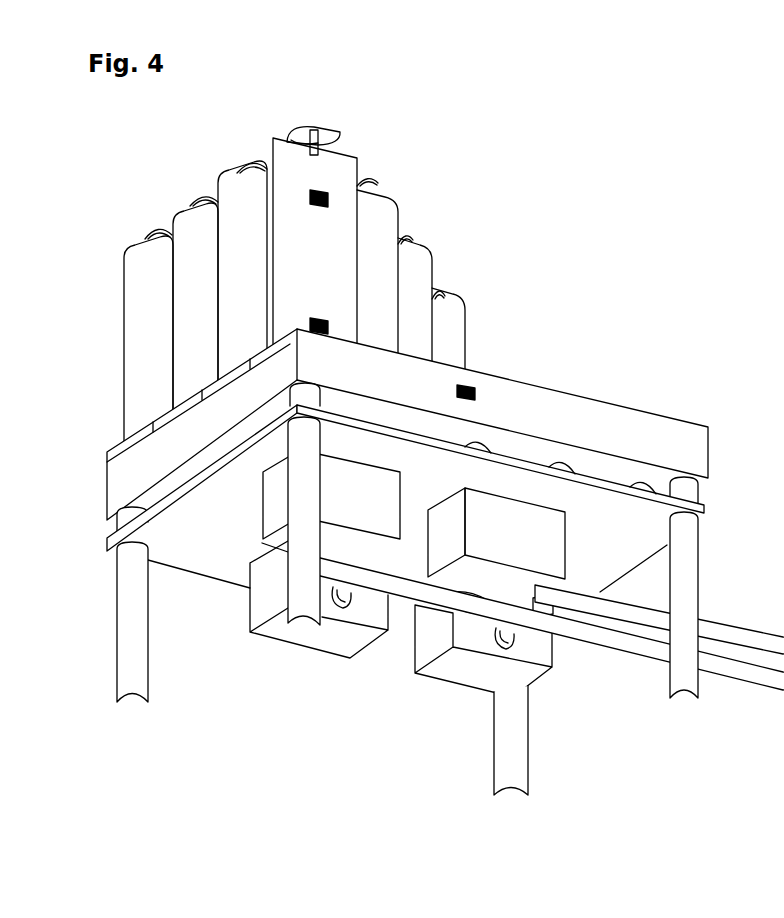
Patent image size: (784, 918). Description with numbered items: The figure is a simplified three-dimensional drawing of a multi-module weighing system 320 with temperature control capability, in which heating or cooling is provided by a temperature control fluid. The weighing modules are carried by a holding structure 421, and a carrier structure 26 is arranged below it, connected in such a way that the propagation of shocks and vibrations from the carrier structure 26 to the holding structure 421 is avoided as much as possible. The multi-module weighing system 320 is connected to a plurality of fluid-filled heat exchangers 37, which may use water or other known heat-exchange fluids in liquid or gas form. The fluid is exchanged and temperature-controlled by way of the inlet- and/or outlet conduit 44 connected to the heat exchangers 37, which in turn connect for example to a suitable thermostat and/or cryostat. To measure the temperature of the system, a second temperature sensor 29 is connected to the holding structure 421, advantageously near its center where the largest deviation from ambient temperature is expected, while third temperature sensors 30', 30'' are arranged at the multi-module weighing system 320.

The multi-module weighing system 320 is at (409, 444).
The third temperature sensor 30'' is at (250, 289).
The third temperature sensor 30' is at (182, 316).
The second temperature sensor 29 is at (584, 325).
The holding structure 421 is at (445, 424).
The heat exchanger 37 is at (414, 514).
The carrier structure 26 is at (133, 604).
The inlet- and/or outlet conduit 44 is at (542, 674).